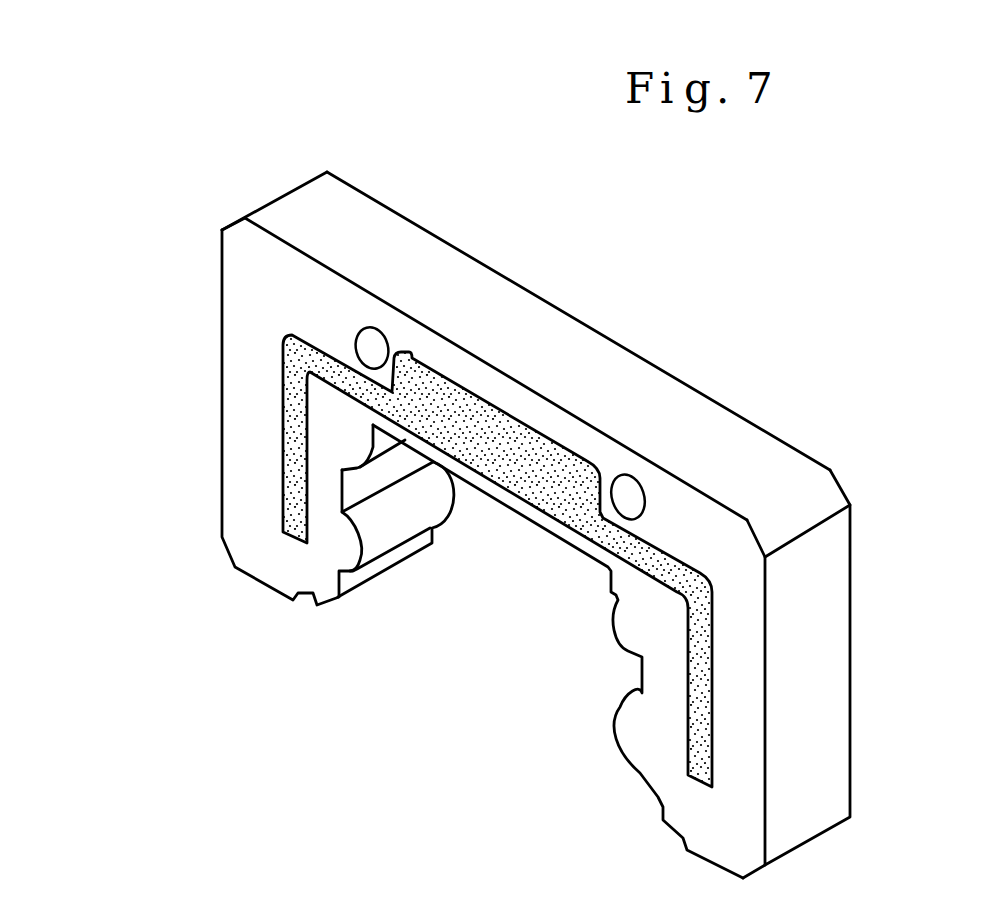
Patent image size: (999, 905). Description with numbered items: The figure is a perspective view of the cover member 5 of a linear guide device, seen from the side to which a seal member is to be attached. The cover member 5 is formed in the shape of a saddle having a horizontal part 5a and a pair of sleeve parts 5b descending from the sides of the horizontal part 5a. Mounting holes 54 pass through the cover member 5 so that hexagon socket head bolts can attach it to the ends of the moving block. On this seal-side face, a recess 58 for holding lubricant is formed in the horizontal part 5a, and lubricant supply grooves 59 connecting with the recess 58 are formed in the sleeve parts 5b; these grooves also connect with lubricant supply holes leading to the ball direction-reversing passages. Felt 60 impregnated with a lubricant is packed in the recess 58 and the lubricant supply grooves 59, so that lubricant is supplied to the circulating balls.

The cover member 5 is at (554, 262).
The horizontal part 5a is at (571, 350).
The sleeve parts 5b is at (238, 438).
The mounting holes 54 is at (363, 340).
The recess 58 is at (514, 492).
The lubricant supply grooves 59 is at (302, 500).
The felt 60 is at (447, 400).